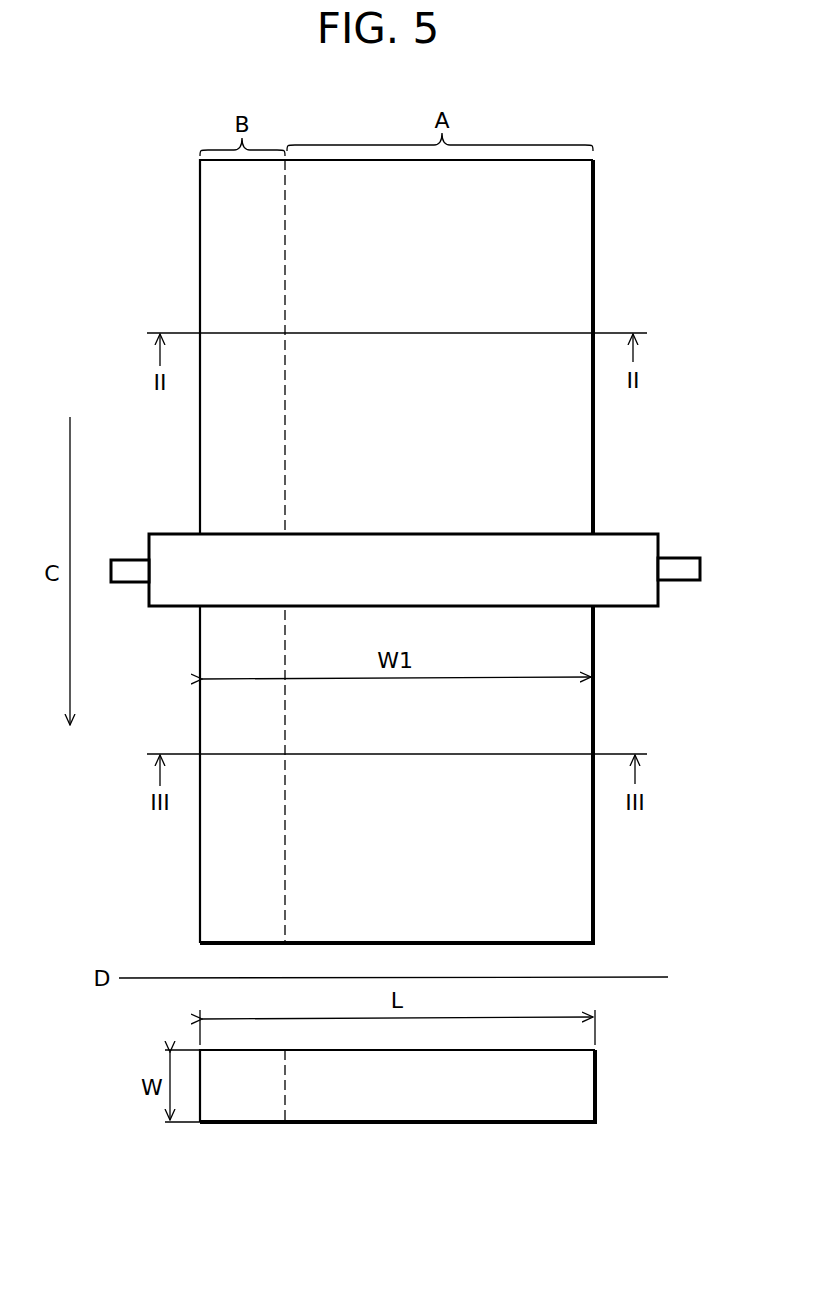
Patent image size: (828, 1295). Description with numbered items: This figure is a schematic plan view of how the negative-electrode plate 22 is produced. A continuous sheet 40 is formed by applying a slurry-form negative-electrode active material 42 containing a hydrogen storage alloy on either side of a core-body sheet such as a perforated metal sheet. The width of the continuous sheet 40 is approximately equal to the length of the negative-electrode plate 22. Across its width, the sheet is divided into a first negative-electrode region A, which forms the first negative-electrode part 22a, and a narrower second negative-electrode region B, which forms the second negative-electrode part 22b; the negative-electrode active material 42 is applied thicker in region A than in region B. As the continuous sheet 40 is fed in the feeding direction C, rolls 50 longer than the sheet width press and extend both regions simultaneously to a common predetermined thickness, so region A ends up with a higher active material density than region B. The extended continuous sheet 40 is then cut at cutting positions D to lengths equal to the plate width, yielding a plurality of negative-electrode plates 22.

The continuous sheet 40 is at (198, 232).
The negative-electrode active material 42 is at (560, 223).
The rolls 50 is at (615, 540).
The negative-electrode plate 22 is at (570, 1079).
The first negative-electrode part 22a is at (288, 1128).
The second negative-electrode part 22b is at (200, 1128).